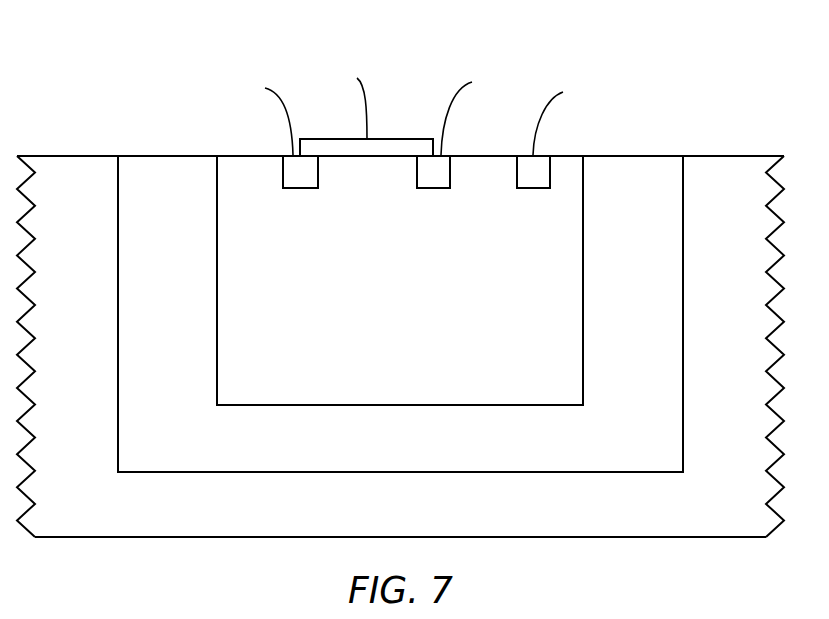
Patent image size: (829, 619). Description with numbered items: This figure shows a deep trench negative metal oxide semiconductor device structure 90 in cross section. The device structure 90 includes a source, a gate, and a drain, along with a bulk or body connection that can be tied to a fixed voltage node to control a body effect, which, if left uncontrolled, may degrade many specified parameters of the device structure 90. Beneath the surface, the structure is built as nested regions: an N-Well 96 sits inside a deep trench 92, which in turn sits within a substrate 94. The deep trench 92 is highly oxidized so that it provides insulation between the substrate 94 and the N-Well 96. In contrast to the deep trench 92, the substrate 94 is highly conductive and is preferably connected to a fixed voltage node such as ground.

The deep trench NMOS device structure 90 is at (211, 72).
The deep trench 92 is at (513, 449).
The substrate 94 is at (513, 514).
The N-Well 96 is at (478, 376).